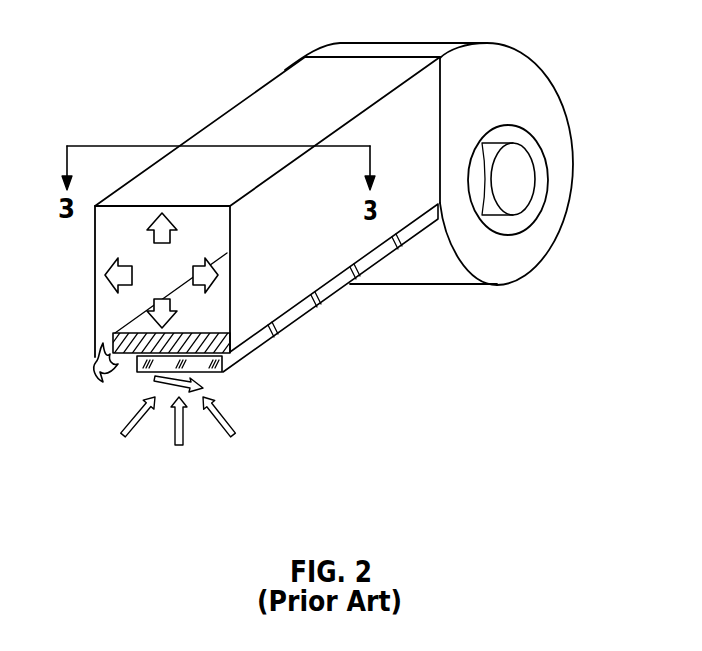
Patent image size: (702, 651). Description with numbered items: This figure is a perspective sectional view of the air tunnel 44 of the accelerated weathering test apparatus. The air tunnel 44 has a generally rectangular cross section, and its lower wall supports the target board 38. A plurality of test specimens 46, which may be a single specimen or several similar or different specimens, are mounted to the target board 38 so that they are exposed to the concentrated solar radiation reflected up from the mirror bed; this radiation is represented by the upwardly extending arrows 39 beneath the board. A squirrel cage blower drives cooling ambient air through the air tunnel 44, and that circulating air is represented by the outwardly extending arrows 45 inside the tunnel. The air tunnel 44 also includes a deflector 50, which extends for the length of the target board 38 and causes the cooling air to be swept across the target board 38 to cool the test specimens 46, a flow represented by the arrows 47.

The target board 38 is at (231, 355).
The upwardly extending arrows 39 is at (123, 428).
The air tunnel 44 is at (258, 102).
The outwardly extending arrows 45 is at (105, 272).
The test specimens 46 is at (548, 112).
The arrows 47 is at (102, 364).
The deflector 50 is at (104, 378).